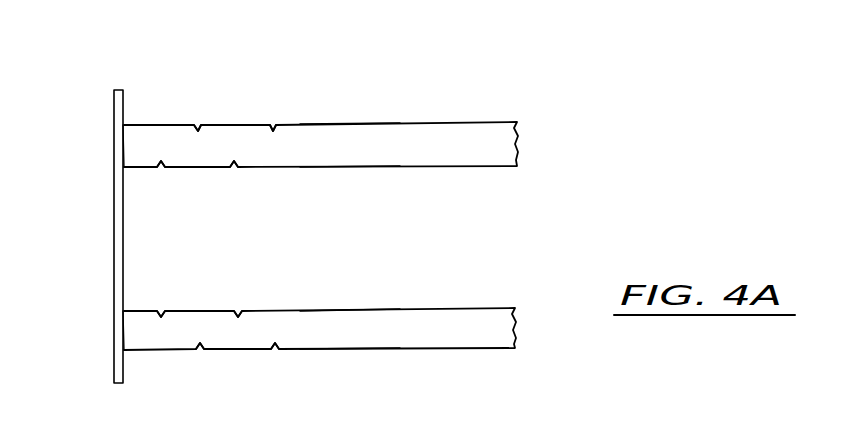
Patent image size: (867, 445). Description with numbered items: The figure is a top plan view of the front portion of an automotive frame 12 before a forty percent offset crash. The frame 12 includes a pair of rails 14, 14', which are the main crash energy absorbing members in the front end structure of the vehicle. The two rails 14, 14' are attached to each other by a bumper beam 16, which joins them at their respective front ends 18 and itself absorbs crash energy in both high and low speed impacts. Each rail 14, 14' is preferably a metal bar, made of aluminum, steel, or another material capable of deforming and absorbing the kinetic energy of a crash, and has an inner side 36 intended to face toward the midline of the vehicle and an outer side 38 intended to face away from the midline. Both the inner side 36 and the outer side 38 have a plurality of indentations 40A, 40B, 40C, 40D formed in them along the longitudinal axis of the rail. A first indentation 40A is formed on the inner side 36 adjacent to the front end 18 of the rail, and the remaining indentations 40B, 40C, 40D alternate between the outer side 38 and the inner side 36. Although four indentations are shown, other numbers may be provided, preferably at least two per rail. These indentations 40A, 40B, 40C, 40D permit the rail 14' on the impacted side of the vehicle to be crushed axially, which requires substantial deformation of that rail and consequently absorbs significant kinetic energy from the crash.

The automotive frame 12 is at (78, 75).
The rail 14 is at (327, 115).
The rail 14' is at (320, 299).
The bumper beam 16 is at (114, 213).
The front end 18 is at (116, 143).
The inner side 36 is at (358, 167).
The outer side 38 is at (355, 122).
The first indentation 40A is at (161, 310).
The indentation 40B is at (198, 124).
The indentation 40C is at (238, 310).
The indentation 40D is at (275, 124).